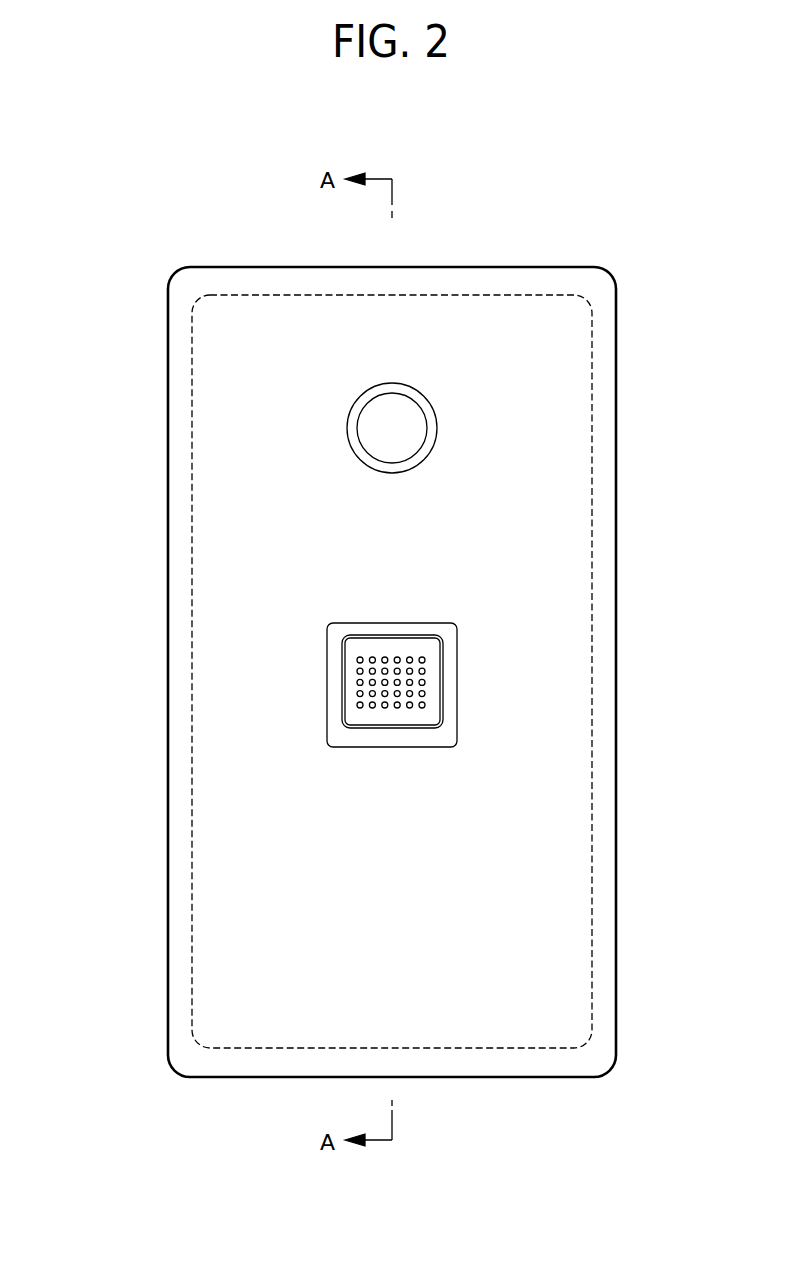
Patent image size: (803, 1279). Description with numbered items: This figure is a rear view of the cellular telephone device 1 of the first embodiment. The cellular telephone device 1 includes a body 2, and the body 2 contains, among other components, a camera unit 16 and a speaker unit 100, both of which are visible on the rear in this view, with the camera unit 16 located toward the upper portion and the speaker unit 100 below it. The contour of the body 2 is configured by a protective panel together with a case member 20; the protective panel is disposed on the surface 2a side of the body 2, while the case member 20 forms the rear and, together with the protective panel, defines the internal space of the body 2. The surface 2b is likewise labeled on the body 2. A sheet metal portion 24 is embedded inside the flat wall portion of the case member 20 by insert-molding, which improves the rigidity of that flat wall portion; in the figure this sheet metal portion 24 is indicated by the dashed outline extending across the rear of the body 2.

The cellular telephone device 1 is at (376, 573).
The body 2 is at (376, 647).
The surface 2a is at (183, 267).
The housing inner surface 2b is at (373, 671).
The case member 20 is at (342, 665).
The sheet metal portion 24 is at (582, 999).
The camera unit 16 is at (420, 427).
The speaker unit 100 is at (443, 652).